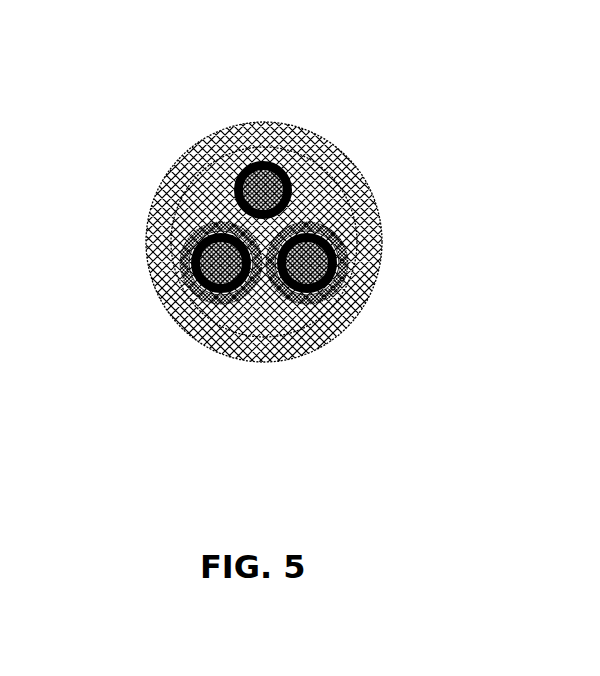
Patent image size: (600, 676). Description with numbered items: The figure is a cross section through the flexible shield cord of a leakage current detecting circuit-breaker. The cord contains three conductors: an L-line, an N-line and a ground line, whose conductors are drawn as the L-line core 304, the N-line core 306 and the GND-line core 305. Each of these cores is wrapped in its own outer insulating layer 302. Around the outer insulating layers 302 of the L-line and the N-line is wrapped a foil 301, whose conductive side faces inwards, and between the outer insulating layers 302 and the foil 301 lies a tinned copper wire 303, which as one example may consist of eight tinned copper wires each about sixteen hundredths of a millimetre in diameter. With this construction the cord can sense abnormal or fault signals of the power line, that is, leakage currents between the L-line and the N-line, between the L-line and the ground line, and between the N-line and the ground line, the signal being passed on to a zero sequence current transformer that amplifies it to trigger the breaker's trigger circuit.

The foil 301 is at (248, 302).
The outer insulating layers 302 is at (224, 222).
The tinned copper wire 303 is at (272, 316).
The L-line core 304 is at (343, 284).
The GND-line core 305 is at (219, 128).
The N-line core 306 is at (181, 286).